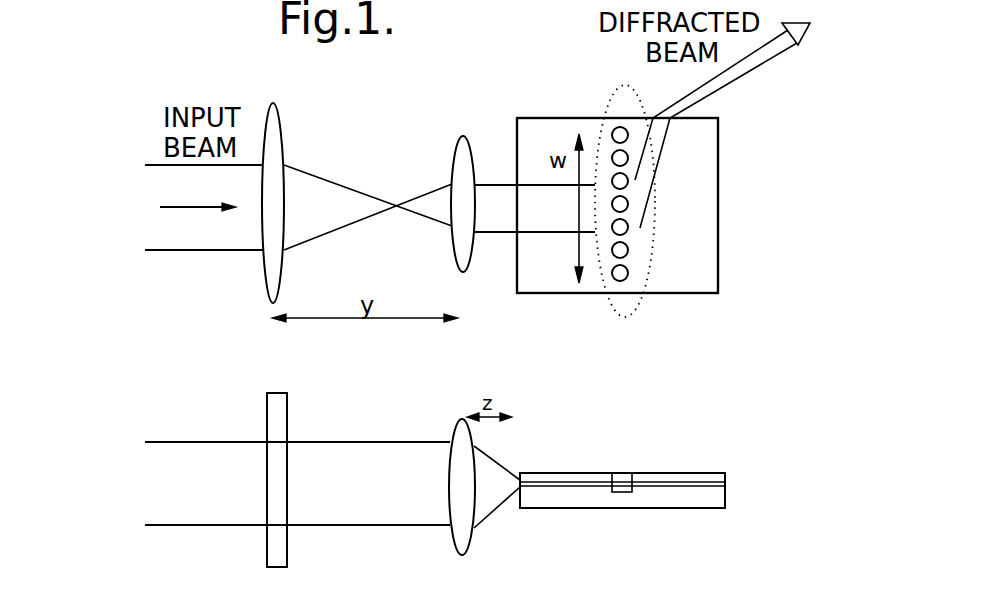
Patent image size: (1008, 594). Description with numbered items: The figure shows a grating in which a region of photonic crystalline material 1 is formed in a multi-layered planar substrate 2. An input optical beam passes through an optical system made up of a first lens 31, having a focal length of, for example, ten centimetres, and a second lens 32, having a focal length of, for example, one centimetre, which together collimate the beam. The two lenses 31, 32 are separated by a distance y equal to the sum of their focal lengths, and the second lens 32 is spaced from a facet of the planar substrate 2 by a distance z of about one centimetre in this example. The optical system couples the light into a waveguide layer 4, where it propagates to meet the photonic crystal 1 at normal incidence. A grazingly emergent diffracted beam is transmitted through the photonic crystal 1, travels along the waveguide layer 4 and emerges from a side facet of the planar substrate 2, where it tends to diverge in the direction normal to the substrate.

The photonic crystalline material 1 is at (625, 322).
The multi-layered planar substrate 2 is at (696, 274).
The waveguide layer 4 is at (552, 481).
The first lens 31 is at (281, 118).
The second lens 32 is at (455, 148).